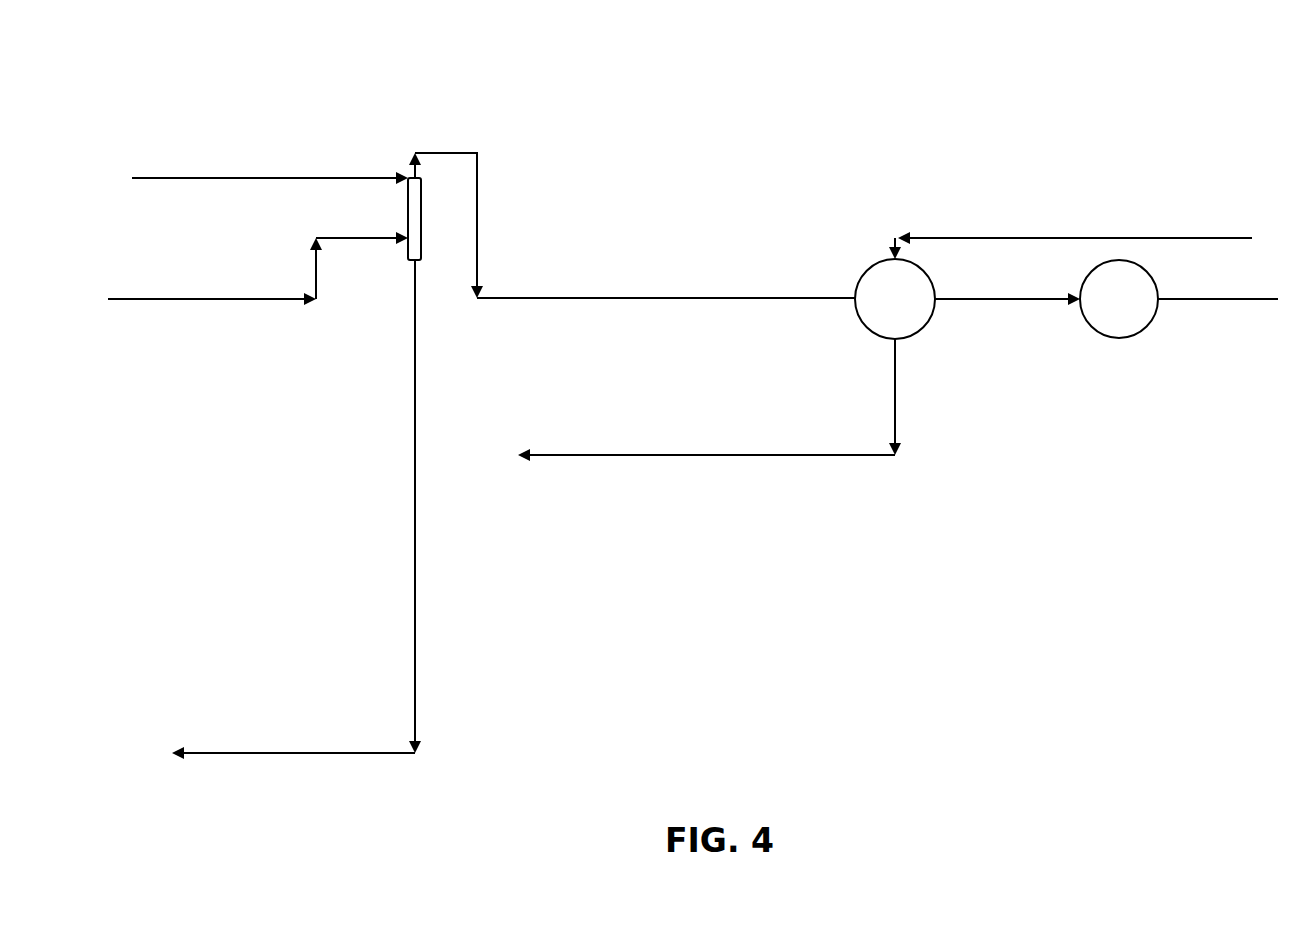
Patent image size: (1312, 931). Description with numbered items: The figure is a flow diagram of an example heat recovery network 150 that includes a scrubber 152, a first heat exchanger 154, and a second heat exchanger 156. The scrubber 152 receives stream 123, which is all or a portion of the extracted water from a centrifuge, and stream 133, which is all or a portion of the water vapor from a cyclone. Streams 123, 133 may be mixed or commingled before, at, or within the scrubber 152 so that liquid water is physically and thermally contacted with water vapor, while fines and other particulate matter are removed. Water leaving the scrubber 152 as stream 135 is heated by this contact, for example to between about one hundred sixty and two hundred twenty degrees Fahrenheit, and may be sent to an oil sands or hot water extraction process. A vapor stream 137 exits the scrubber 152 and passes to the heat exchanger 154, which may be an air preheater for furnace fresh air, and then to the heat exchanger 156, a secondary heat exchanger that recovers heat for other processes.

The heat recovery network 150 is at (1279, 93).
The stream 123 is at (143, 178).
The stream 133 is at (167, 299).
The stream 135 is at (418, 658).
The vapor stream 137 is at (513, 298).
The scrubber 152 is at (421, 225).
The first heat exchanger 154 is at (907, 332).
The second heat exchanger 156 is at (1142, 332).